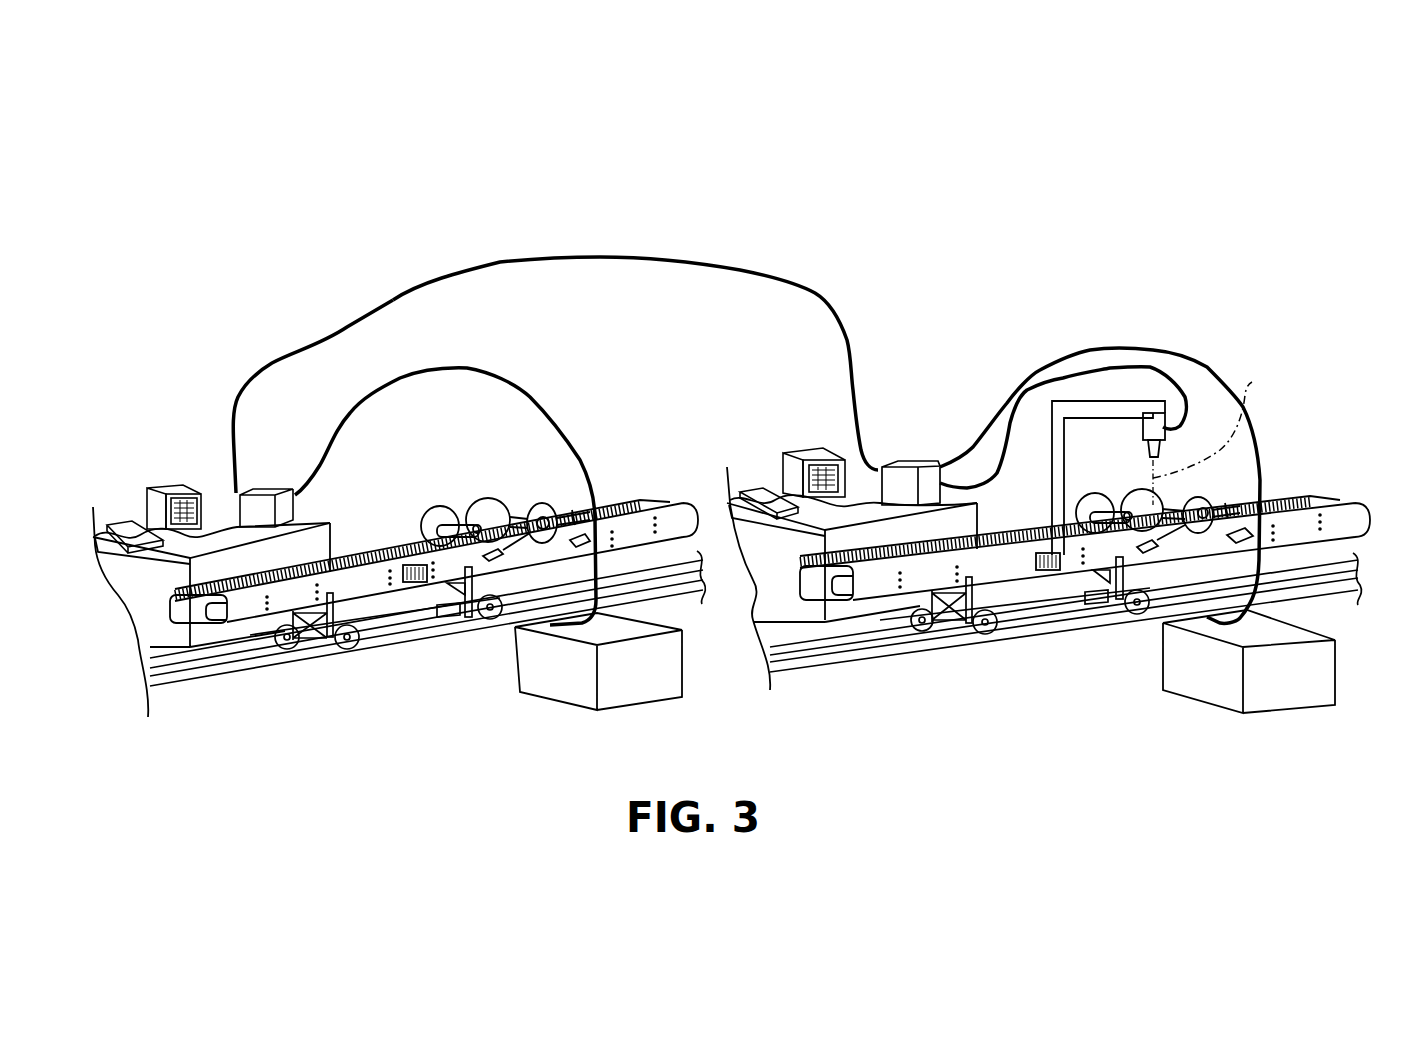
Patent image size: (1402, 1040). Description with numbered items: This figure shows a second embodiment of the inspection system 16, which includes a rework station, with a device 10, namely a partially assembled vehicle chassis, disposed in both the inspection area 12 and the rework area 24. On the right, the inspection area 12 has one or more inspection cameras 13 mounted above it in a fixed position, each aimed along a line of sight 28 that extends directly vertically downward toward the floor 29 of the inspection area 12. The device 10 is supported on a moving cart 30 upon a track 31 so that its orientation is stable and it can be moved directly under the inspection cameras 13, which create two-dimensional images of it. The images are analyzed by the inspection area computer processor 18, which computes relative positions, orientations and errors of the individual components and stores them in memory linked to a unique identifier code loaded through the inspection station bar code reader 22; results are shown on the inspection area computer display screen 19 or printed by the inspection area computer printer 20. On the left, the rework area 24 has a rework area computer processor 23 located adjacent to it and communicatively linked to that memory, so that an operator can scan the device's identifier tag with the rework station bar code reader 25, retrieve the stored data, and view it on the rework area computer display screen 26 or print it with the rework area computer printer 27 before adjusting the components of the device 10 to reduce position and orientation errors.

The device 10 is at (258, 610).
The inspection area 12 is at (1140, 325).
The inspection camera 13 is at (1165, 423).
The inspection system 16 is at (610, 205).
The inspection area computer processor 18 is at (907, 470).
The inspection area computer display screen 19 is at (810, 457).
The inspection area computer printer 20 is at (778, 510).
The inspection station bar code reader 22 is at (1203, 623).
The rework area computer processor 23 is at (263, 500).
The rework area 24 is at (217, 407).
The rework station bar code reader 25 is at (547, 630).
The rework area computer display screen 26 is at (188, 490).
The rework area computer printer 27 is at (133, 537).
The line of sight 28 is at (1252, 382).
The floor 29 is at (1040, 640).
The moving cart 30 is at (420, 612).
The track 31 is at (233, 677).